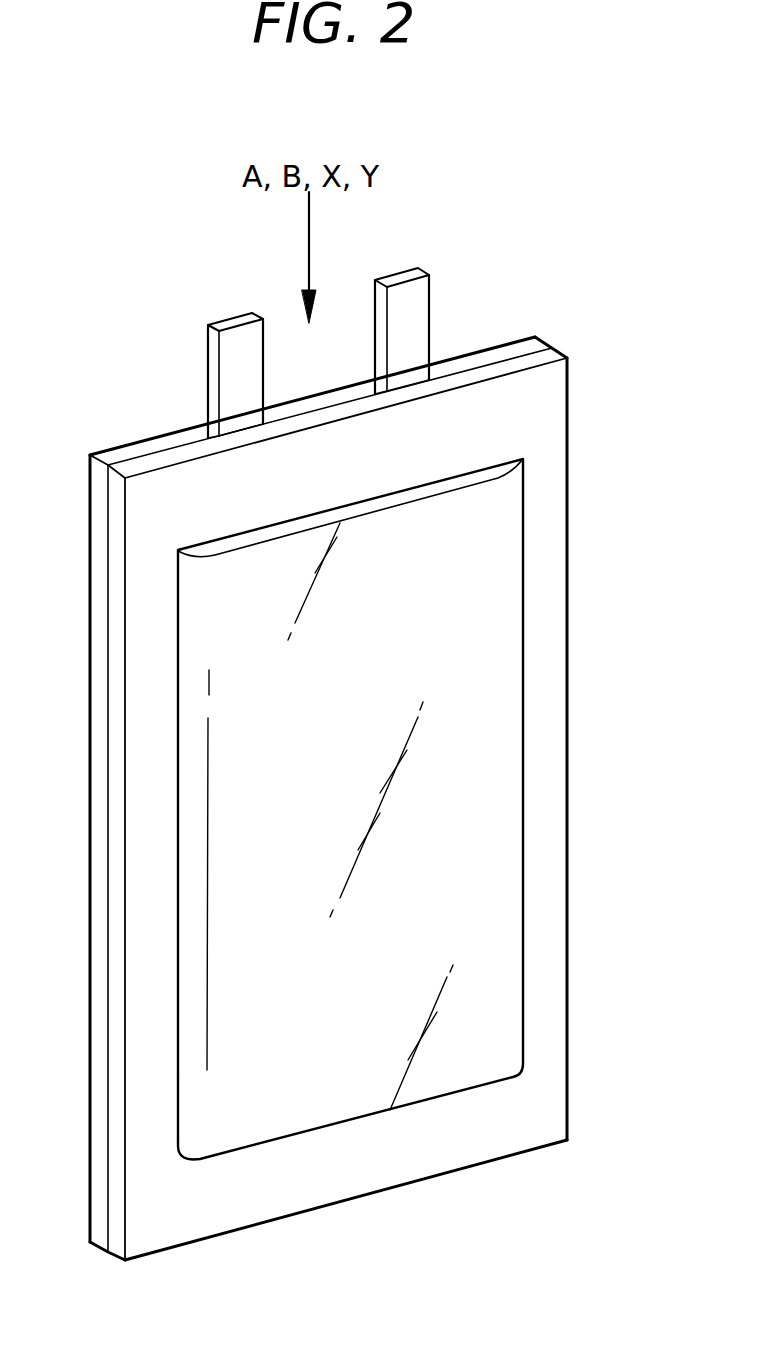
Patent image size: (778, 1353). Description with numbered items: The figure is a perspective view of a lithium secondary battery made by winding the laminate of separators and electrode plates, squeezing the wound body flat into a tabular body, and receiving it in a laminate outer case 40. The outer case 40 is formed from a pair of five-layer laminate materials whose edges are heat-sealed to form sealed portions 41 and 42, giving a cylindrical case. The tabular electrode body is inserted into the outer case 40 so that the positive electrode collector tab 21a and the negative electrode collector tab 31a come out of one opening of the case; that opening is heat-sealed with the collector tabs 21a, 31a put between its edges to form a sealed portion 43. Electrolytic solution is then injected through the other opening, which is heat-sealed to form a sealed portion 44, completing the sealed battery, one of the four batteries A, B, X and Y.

The positive electrode collector tab 21a is at (242, 365).
The negative electrode collector tab 31a is at (405, 320).
The laminate outer case 40 is at (462, 627).
The sealed portion 41 is at (142, 817).
The sealed portion 42 is at (540, 745).
The sealed portion 43 is at (162, 498).
The sealed portion 44 is at (408, 1155).